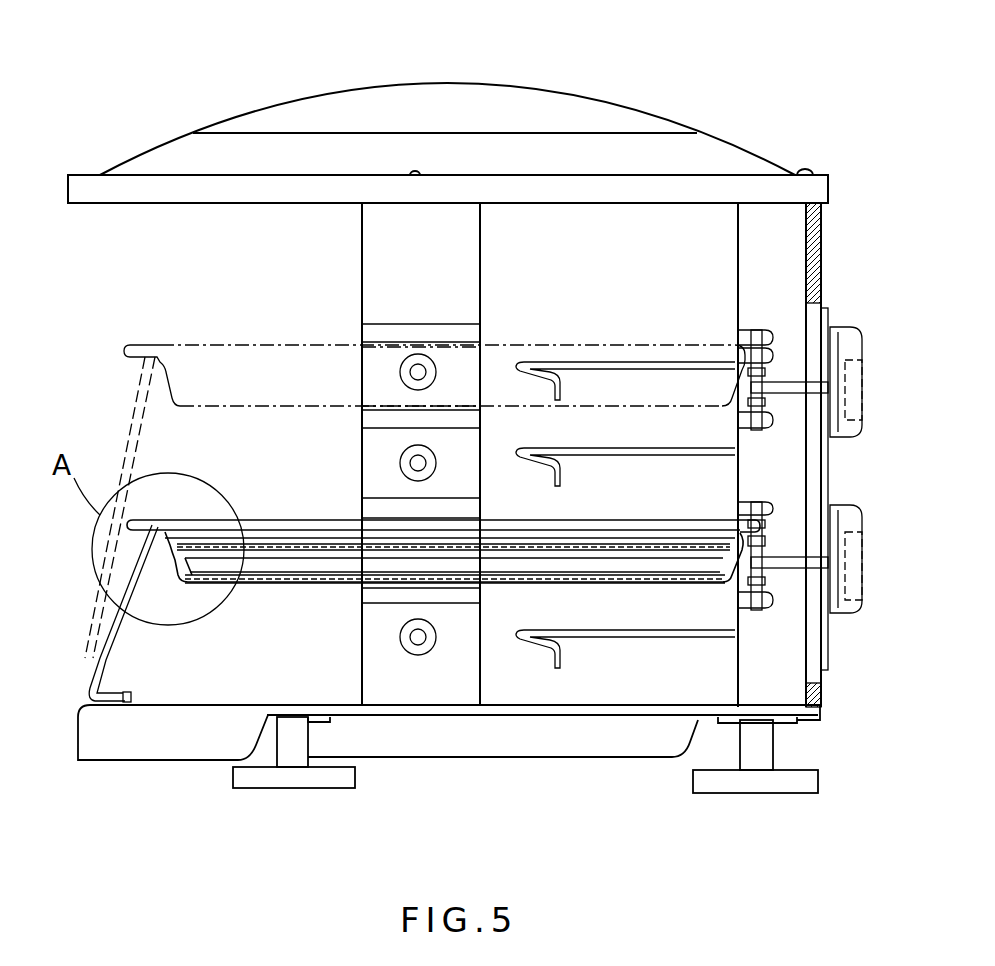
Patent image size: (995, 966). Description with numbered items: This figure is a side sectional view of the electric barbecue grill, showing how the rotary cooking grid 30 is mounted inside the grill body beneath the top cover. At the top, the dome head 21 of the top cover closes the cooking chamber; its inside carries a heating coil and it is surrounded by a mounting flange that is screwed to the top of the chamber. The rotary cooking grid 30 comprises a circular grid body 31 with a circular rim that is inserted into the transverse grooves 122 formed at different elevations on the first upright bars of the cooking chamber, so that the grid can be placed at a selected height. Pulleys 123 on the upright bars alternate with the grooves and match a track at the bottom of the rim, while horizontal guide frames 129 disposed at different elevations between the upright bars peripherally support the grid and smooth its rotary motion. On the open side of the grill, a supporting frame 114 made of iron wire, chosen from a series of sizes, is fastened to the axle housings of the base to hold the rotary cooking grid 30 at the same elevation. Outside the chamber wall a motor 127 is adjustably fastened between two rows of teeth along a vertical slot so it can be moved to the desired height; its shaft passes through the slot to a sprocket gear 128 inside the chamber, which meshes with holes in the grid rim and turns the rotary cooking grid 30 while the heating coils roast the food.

The dome head 21 is at (487, 110).
The transverse grooves 122 is at (415, 335).
The pulleys 123 is at (430, 645).
The guide frames 129 is at (660, 367).
The sprocket gear 128 is at (770, 600).
The motor 127 is at (847, 557).
The circular grid body 31 is at (268, 522).
The rotary cooking grid 30 is at (312, 586).
The supporting frame 114 is at (135, 420).